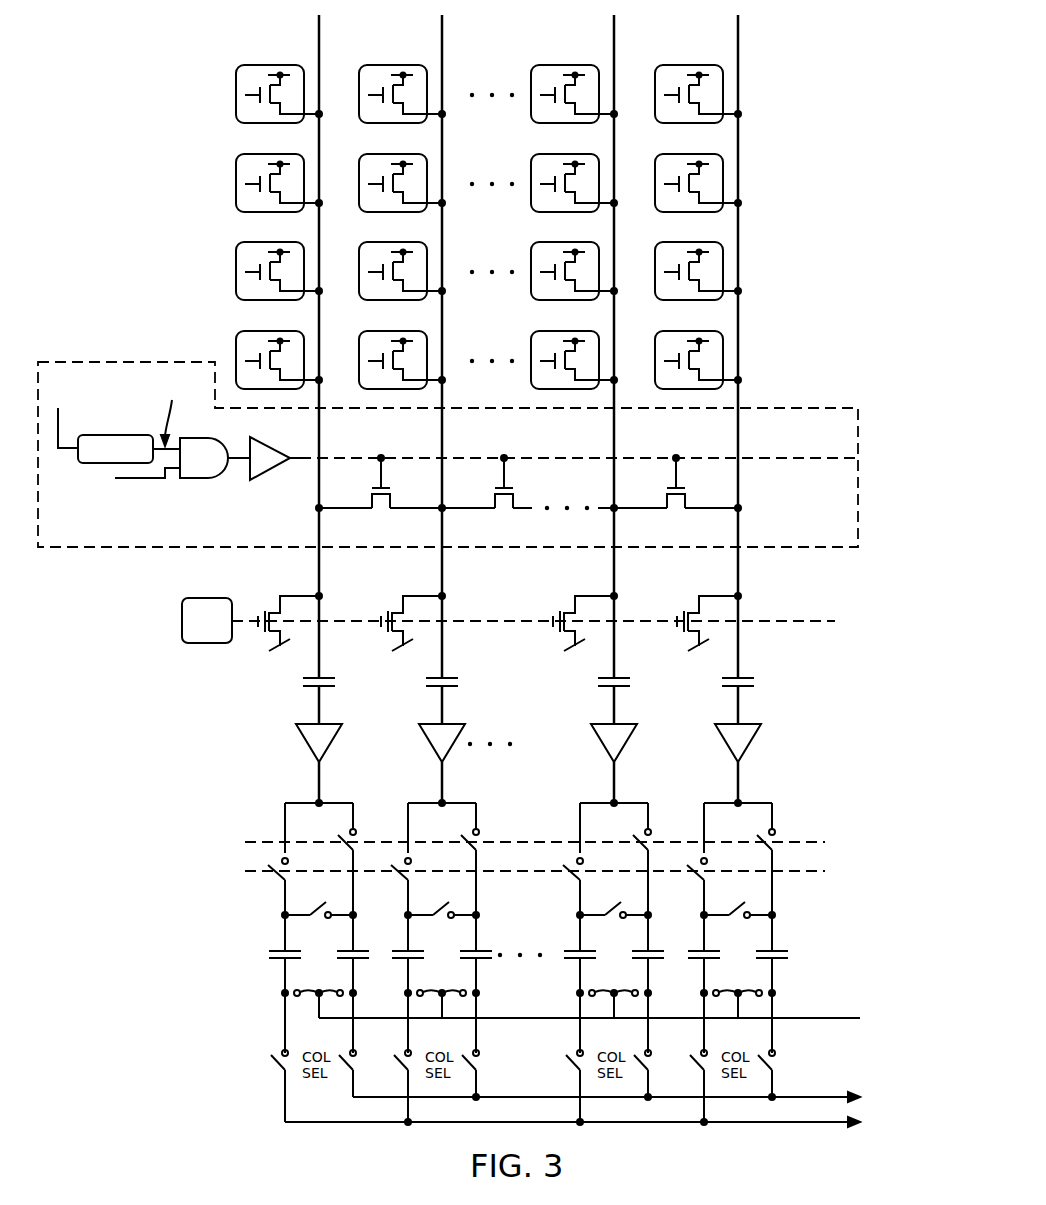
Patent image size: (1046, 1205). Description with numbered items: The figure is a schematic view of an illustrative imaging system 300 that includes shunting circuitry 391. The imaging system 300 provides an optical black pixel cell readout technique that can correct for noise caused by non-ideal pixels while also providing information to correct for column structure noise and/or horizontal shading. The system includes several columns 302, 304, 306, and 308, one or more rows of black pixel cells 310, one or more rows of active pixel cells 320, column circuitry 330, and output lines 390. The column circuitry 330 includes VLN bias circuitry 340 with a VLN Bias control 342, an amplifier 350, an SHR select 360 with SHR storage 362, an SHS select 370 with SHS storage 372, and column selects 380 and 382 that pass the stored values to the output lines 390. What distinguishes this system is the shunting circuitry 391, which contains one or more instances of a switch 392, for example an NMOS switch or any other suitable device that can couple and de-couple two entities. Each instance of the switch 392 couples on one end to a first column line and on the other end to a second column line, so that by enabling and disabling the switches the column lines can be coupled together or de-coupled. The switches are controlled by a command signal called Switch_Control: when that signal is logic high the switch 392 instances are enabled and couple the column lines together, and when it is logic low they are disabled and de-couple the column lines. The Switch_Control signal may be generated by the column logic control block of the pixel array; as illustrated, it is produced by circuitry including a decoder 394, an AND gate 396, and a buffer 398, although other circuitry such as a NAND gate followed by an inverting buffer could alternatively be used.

The imaging system 300 is at (163, 29).
The column 302 is at (318, 35).
The column 304 is at (441, 35).
The column 306 is at (613, 35).
The column 308 is at (737, 35).
The row of black pixel cells 310 is at (762, 217).
The rows of active pixel cells 320 is at (762, 393).
The column circuitry 330 is at (165, 1135).
The VLN bias circuitry 340 is at (300, 595).
The VLN Bias control 342 is at (213, 597).
The amplifier 350 is at (310, 744).
The SHR select 360 is at (369, 852).
The SHR storage 362 is at (369, 954).
The SHS select 370 is at (265, 890).
The SHS storage 372 is at (271, 954).
The column select 380 is at (265, 1086).
The column select 382 is at (370, 1061).
The output lines 390 is at (820, 1124).
The shunting circuitry 391 is at (131, 360).
The switch 392 is at (380, 505).
The decoder 394 is at (136, 434).
The AND gate 396 is at (212, 478).
The buffer 398 is at (276, 472).